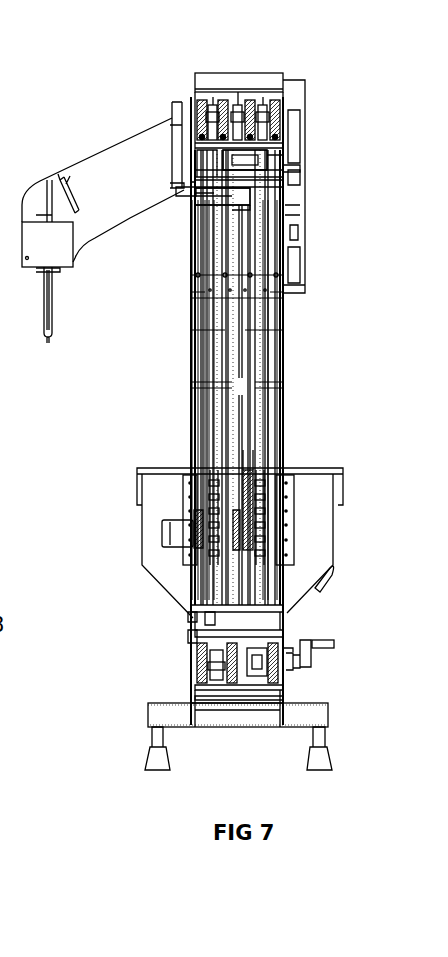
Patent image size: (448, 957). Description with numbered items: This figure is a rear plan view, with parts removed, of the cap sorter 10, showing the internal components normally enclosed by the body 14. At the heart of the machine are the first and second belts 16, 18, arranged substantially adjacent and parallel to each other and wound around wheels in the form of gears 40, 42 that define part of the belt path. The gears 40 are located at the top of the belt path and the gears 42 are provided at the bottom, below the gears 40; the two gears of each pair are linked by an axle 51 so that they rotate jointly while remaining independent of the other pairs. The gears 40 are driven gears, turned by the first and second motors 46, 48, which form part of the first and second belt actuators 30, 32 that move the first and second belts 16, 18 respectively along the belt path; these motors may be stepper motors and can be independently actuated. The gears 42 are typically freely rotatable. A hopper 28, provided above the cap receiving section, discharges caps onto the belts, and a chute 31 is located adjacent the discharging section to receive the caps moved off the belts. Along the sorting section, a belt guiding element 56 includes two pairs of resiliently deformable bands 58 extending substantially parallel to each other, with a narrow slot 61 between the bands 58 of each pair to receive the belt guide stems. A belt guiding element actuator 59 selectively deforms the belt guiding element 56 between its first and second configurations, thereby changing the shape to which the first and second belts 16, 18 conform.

The cap sorter 10 is at (104, 78).
The body 14 is at (329, 706).
The first belt 16 is at (252, 468).
The second belt 18 is at (200, 477).
The hopper 28 is at (145, 482).
The first belt actuator 30 is at (267, 163).
The chute 31 is at (118, 150).
The second belt actuator 32 is at (207, 203).
The gears 40 is at (228, 108).
The gears 42 is at (195, 675).
The first motor 46 is at (267, 163).
The second motor 48 is at (207, 203).
The axle 51 is at (198, 97).
The belt guiding element 56 is at (210, 415).
The bands 58 is at (213, 334).
The belt guiding element actuator 59 is at (339, 629).
The slot 61 is at (193, 304).